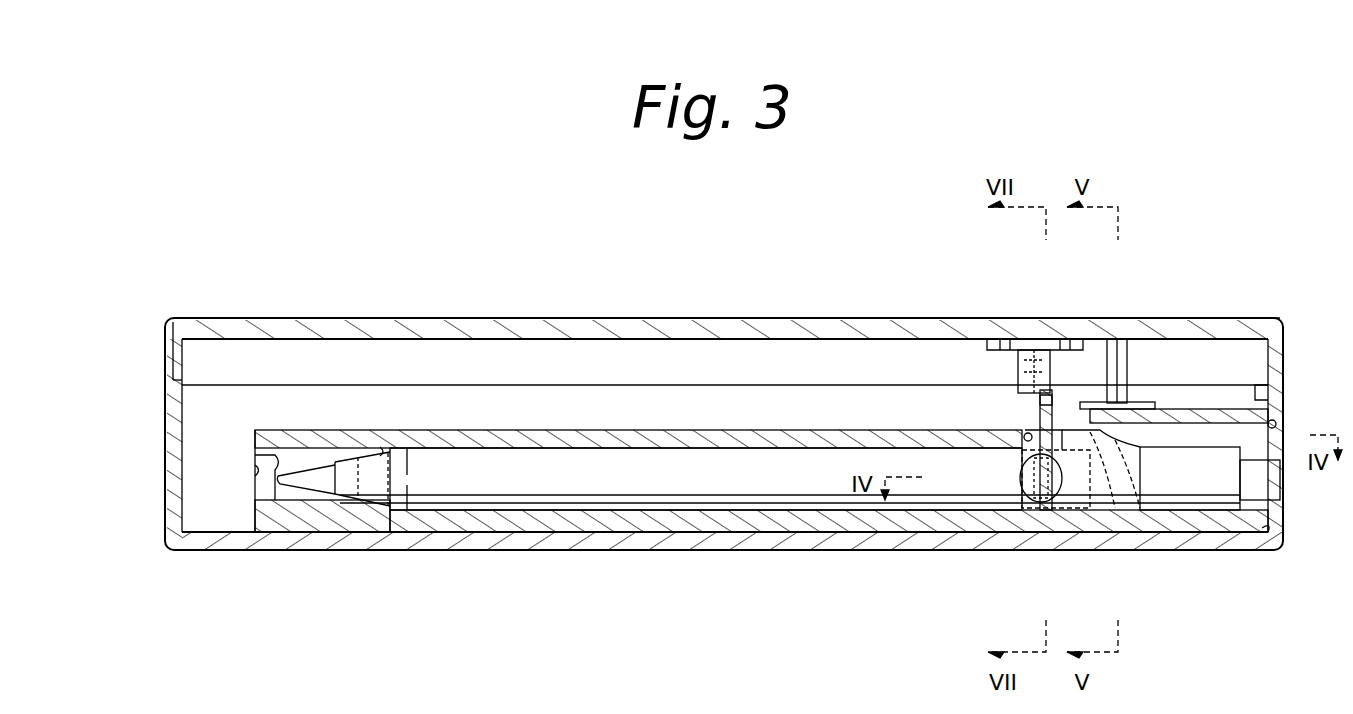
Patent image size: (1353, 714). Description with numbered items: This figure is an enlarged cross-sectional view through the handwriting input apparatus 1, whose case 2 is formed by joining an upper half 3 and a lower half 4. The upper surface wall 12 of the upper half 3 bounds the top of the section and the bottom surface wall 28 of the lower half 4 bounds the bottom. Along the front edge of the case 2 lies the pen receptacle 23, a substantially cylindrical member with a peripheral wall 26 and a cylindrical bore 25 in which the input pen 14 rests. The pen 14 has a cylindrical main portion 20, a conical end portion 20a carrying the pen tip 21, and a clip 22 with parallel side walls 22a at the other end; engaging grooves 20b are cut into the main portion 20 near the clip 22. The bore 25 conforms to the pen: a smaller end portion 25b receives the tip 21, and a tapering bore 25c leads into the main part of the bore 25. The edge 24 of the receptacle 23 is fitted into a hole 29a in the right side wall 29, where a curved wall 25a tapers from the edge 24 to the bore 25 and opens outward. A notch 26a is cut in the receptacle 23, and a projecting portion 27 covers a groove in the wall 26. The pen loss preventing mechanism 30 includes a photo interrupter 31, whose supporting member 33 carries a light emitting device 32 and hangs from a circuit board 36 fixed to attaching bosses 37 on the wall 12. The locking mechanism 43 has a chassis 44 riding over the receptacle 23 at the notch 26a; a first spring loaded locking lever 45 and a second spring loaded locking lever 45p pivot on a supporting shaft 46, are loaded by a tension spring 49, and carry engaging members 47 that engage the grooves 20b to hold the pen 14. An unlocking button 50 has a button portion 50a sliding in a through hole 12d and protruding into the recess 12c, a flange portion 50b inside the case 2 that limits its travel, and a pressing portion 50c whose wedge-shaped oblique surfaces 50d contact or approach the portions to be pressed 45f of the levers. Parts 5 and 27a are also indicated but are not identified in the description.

The handwriting input apparatus 1 is at (280, 300).
The case 2 is at (190, 283).
The upper case half 3 is at (178, 332).
The lower case half 4 is at (170, 336).
The top wall 5 is at (560, 330).
The upper surface wall 12 is at (680, 330).
The concave portion 12c is at (1095, 338).
The through hole 12d is at (992, 340).
The input pen 14 is at (1283, 494).
The main portion 20 is at (500, 508).
The end portion 20a is at (345, 502).
The engaging grooves 20b is at (1000, 508).
The pen tip 21 is at (300, 495).
The clip 22 is at (1276, 342).
The side walls 22a is at (1151, 470).
The pen receptacle 23 is at (312, 430).
The edge 24 is at (1262, 530).
The cylindrical bore 25 is at (634, 458).
The wall 25a is at (1280, 530).
The end portion 25b is at (258, 470).
The tapering bore 25c is at (382, 448).
The peripheral wall 26 is at (532, 436).
The notch 26a is at (1022, 440).
The projecting portion 27 is at (1240, 400).
The rear block guide 27a is at (1125, 500).
The bottom surface wall 28 is at (775, 540).
The right side wall 29 is at (1278, 395).
The hole 29a is at (1278, 424).
The pen loss preventing mechanism 30 is at (1150, 400).
The photo interrupter 31 is at (1170, 404).
The light emitting device 32 is at (1074, 479).
The supporting member 33 is at (1137, 470).
The circuit board 36 is at (1222, 345).
The attaching bosses 37 is at (1120, 345).
The locking mechanism 43 is at (990, 358).
The chassis 44 is at (1060, 338).
The locking lever 45 is at (1035, 425).
The locking lever 45p is at (1030, 428).
The portion to be pressed 45f is at (1040, 396).
The supporting shaft 46 is at (1025, 430).
The engaging members 47 is at (1046, 512).
The tension spring 49 is at (1022, 466).
The unlocking button 50 is at (1046, 350).
The button portion 50a is at (1002, 340).
The flange portion 50b is at (1070, 345).
The pressing portion 50c is at (1030, 345).
The oblique surfaces 50d is at (1010, 372).